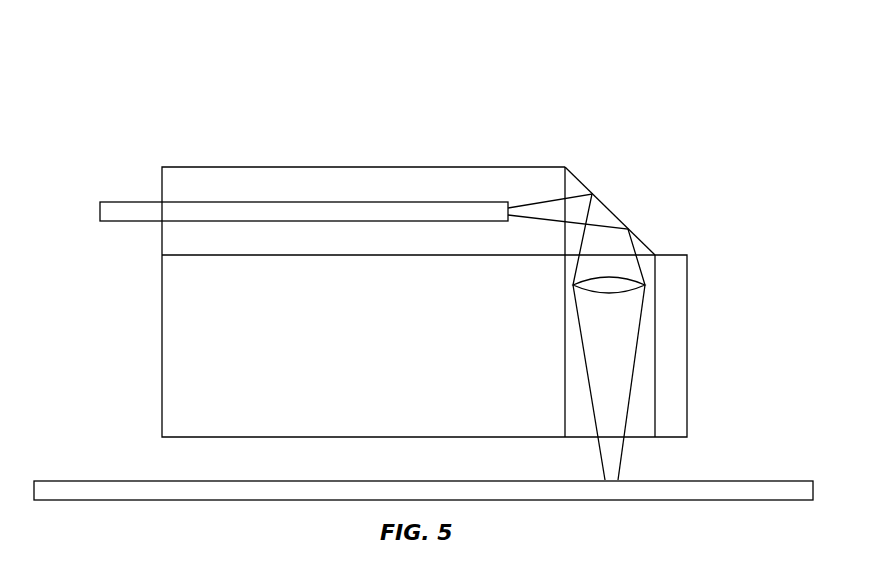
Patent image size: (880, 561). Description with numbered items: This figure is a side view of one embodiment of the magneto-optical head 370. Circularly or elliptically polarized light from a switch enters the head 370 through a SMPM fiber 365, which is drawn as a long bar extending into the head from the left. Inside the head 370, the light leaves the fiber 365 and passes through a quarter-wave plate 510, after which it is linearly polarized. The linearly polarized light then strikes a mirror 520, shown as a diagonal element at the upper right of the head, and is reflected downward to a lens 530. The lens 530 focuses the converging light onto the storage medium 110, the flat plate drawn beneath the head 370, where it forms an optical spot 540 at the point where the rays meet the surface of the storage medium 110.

The storage medium 110 is at (755, 481).
The SMPM fiber 365 is at (125, 202).
The magneto-optical head 370 is at (698, 103).
The quarter-wave plate 510 is at (565, 185).
The mirror 520 is at (608, 210).
The lens 530 is at (645, 285).
The optical spot 540 is at (616, 481).